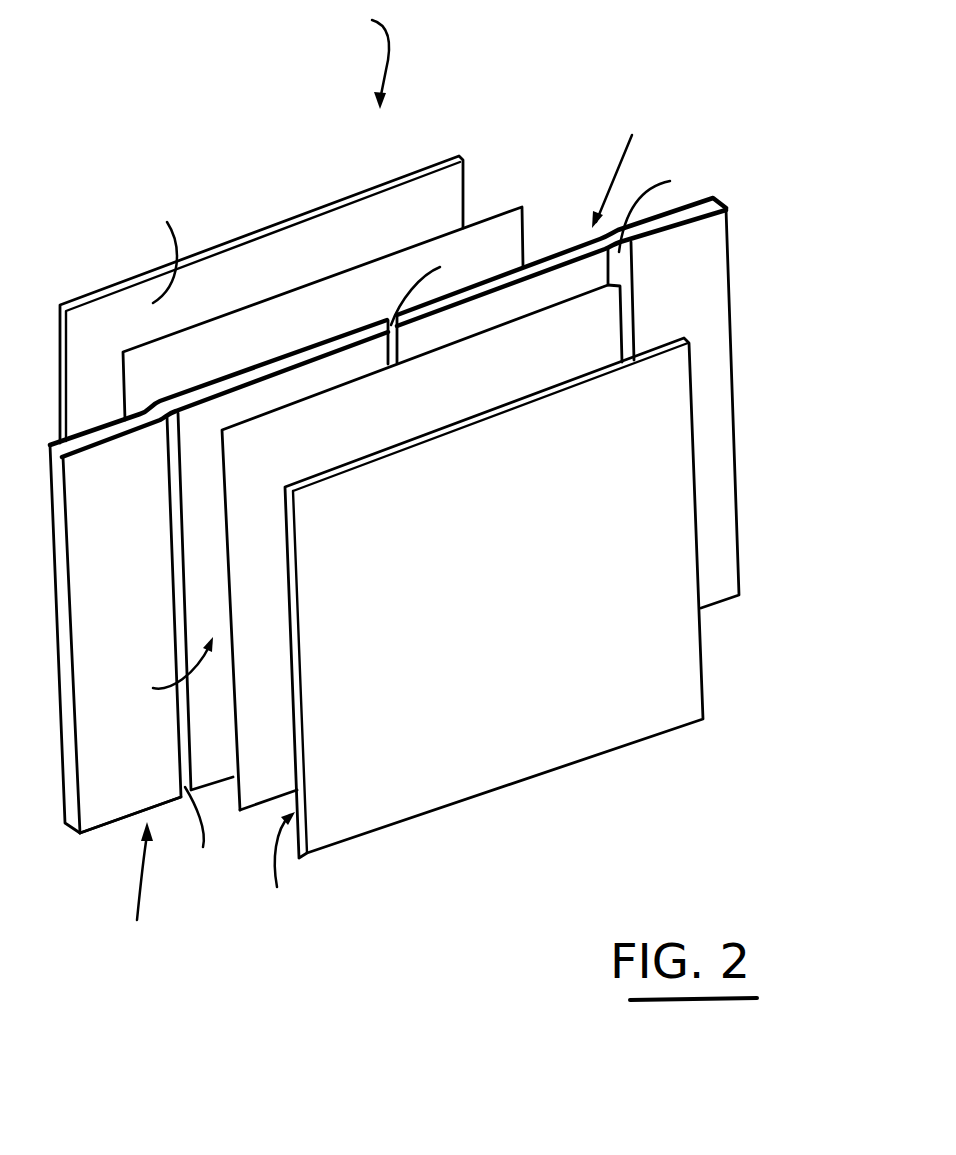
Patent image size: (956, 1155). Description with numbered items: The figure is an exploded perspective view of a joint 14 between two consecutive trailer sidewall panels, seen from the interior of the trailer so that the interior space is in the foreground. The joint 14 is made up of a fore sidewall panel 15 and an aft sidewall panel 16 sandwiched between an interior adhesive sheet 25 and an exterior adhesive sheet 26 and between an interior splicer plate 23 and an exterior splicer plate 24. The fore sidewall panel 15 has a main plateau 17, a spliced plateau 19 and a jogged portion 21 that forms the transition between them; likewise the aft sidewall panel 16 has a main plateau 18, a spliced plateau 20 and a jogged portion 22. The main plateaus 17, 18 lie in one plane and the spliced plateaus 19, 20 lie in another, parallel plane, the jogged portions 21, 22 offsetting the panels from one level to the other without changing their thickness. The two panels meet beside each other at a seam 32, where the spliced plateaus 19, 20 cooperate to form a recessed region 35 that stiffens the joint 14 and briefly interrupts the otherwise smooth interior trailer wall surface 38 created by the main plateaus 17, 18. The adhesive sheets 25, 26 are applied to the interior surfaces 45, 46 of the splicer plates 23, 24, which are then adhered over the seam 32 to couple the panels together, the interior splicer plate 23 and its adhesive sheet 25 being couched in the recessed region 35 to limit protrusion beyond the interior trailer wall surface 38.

The joint 14 is at (363, 54).
The fore sidewall panel 15 is at (631, 168).
The aft sidewall panel 16 is at (104, 707).
The main plateau 17 is at (689, 297).
The main plateau 18 is at (118, 513).
The spliced plateau 19 is at (535, 312).
The spliced plateau 20 is at (304, 398).
The jogged portion 21 is at (666, 200).
The jogged portion 22 is at (205, 650).
The interior splicer plate 23 is at (499, 599).
The exterior splicer plate 24 is at (278, 283).
The interior adhesive sheet 25 is at (441, 410).
The exterior adhesive sheet 26 is at (385, 312).
The seam 32 is at (436, 299).
The recessed region 35 is at (163, 675).
The interior trailer wall surface 38 is at (127, 768).
The interior surface 45 is at (295, 869).
The interior surface 46 is at (160, 242).